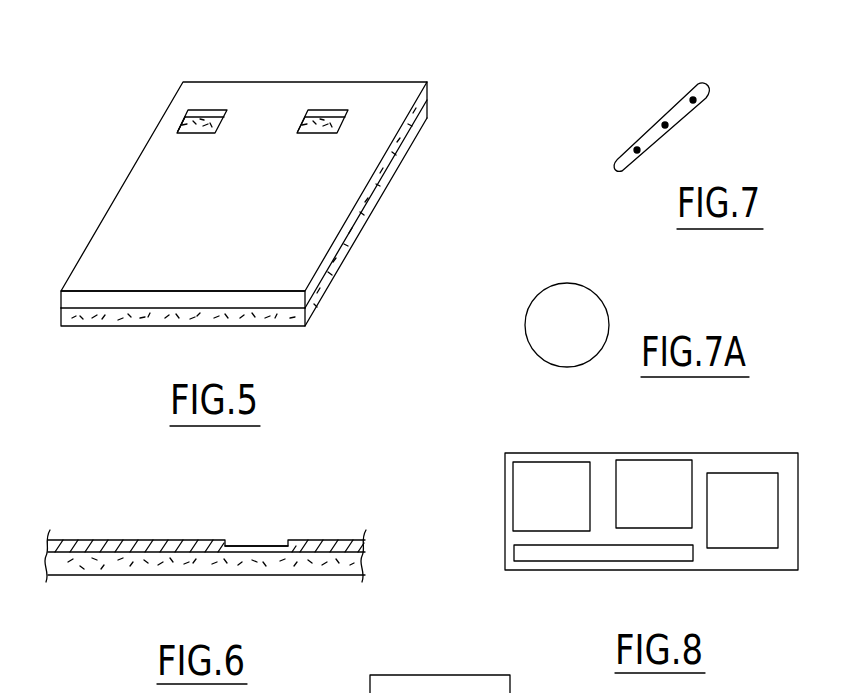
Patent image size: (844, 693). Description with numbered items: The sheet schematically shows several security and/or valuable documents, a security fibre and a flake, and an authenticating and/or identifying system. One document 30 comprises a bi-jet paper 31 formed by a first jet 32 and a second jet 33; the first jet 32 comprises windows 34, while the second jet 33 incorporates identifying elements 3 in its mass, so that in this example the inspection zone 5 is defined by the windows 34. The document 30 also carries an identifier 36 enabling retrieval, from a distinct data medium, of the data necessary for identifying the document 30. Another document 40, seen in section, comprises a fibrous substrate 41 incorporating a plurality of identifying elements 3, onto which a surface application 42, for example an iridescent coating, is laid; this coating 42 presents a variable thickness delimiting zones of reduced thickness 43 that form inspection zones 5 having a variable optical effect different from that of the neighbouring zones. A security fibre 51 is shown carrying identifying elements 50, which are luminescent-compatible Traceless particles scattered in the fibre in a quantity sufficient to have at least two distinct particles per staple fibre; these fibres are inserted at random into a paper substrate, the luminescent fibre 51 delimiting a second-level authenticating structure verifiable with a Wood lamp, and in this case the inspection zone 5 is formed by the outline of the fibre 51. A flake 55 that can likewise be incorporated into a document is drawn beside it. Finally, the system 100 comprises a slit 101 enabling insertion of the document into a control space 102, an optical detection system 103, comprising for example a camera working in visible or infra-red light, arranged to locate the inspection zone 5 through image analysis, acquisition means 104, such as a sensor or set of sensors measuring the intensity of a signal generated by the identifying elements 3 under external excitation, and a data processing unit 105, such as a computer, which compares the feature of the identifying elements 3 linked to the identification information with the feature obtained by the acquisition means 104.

In FIG. 5, the identifying elements 3 is at (375, 200).
In FIG. 6, the identifying elements 3 is at (148, 560).
In FIG. 5, the inspection zone 5 is at (187, 121).
In FIG. 5, the document 30 is at (268, 203).
In FIG. 5, the bi-jet paper 31 is at (102, 261).
In FIG. 5, the first jet 32 is at (185, 265).
In FIG. 5, the second jet 33 is at (258, 326).
In FIG. 5, the windows 34 is at (322, 110).
In FIG. 5, the identifier 36 is at (274, 263).
In FIG. 6, the document 40 is at (209, 559).
In FIG. 6, the fibrous substrate 41 is at (96, 564).
In FIG. 6, the surface application 42 is at (204, 545).
In FIG. 6, the zones of reduced thickness 43 is at (274, 545).
In FIG. 7, the identifying elements 50 is at (664, 123).
In FIG. 7, the security fibre 51 is at (680, 82).
In FIG. 7A, the circular tag 55 is at (548, 322).
In FIG. 8, the system 100 is at (640, 503).
In FIG. 8, the slit 101 is at (547, 552).
In FIG. 8, the control space 102 is at (607, 552).
In FIG. 8, the optical detection system 103 is at (548, 482).
In FIG. 8, the acquisition means 104 is at (655, 483).
In FIG. 8, the data processing unit 105 is at (734, 528).